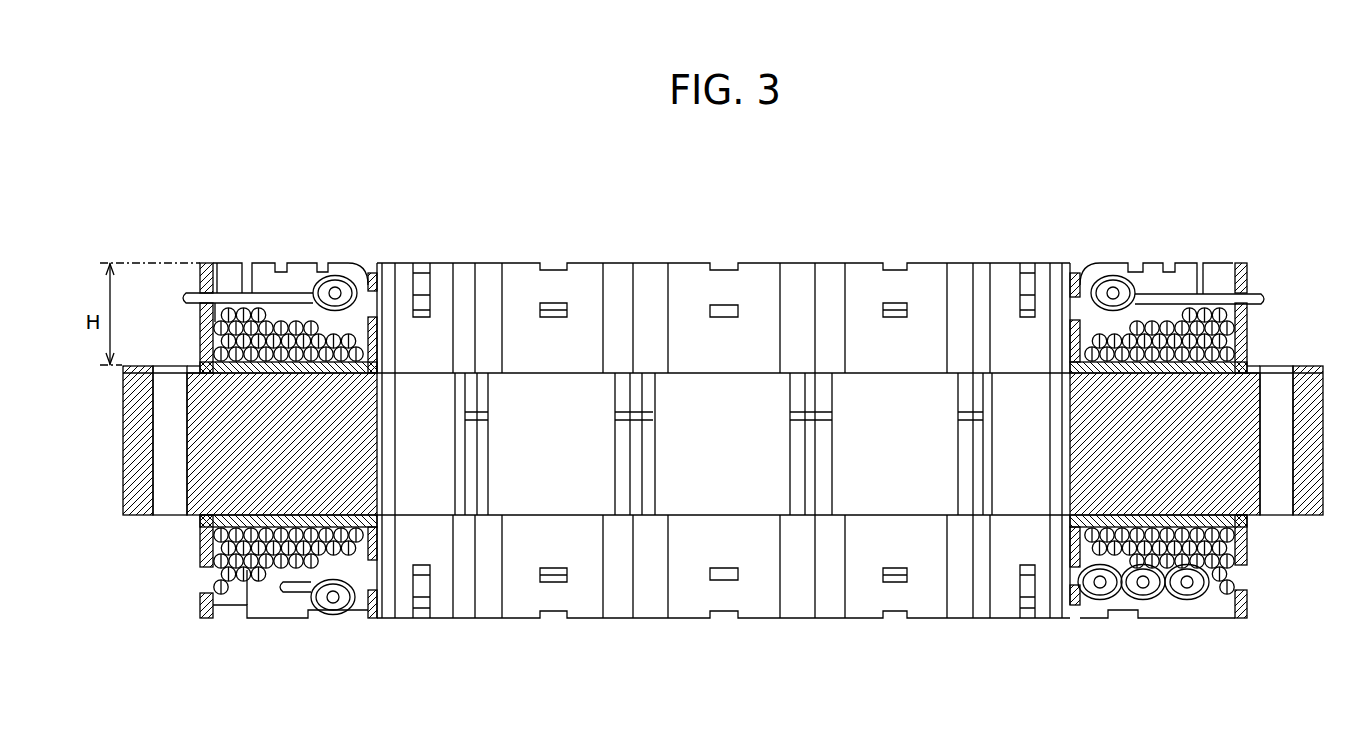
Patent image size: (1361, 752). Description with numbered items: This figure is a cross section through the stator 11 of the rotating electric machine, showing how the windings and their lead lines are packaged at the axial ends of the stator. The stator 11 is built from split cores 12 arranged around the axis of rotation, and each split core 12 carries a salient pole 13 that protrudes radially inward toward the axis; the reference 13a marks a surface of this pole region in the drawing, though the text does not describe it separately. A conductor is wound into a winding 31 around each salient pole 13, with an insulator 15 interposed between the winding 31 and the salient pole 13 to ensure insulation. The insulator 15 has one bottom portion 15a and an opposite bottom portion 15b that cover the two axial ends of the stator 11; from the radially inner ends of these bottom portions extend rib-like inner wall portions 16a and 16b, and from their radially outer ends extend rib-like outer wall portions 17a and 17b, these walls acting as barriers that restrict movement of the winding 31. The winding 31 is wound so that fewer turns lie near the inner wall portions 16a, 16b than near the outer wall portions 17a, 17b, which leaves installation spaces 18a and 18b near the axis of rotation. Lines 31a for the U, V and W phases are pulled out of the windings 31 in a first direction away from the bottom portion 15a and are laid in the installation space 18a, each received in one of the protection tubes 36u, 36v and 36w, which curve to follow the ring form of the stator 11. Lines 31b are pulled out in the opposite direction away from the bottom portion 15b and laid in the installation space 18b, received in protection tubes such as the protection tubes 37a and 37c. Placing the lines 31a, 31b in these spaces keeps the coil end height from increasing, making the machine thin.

The stator 11 is at (1167, 203).
The split core 12 is at (1299, 366).
The salient pole 13 is at (1145, 462).
The core end face 13a is at (1068, 426).
The insulator 15 is at (1252, 270).
The bottom portion 15a is at (1140, 518).
The bottom portion 15b is at (1142, 374).
The inner wall portion 16a is at (1070, 565).
The inner wall portion 16b is at (1072, 322).
The outer wall portion 17a is at (1248, 602).
The outer wall portion 17b is at (1248, 336).
The installation space 18a is at (245, 609).
The installation space 18b is at (271, 304).
The winding 31 is at (205, 321).
The line 31a is at (340, 603).
The line 31b is at (329, 282).
The protection tube 36u is at (325, 613).
The protection tube 36v is at (1140, 599).
The protection tube 36w is at (1098, 600).
The protection tube 37a is at (1112, 277).
The protection tube 37c is at (341, 276).